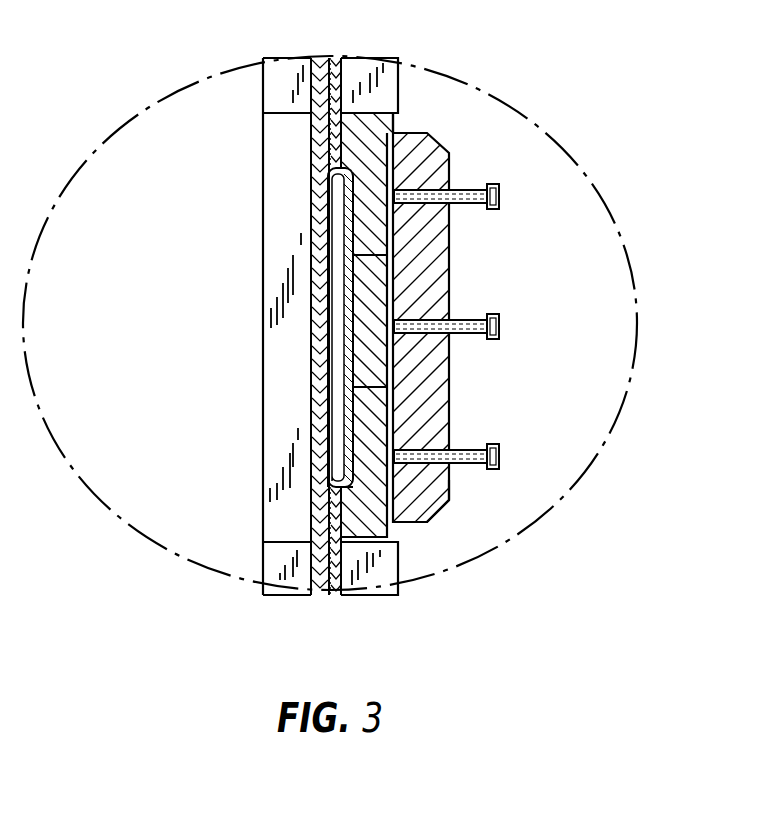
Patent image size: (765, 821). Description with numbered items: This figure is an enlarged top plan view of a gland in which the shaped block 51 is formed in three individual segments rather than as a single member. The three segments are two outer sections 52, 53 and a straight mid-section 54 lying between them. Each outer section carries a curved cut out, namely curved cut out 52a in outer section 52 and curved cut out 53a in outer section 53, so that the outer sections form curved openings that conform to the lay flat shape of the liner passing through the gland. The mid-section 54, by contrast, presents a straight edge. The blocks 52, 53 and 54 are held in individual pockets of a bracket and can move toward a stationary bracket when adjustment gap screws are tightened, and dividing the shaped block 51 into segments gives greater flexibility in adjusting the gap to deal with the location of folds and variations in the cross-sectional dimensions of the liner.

The shaped block 51 is at (394, 121).
The outer section 53 is at (370, 160).
The curved cut out 53a is at (355, 180).
The straight mid-section 54 is at (370, 320).
The outer section 52 is at (367, 522).
The curved cut out 52a is at (437, 507).